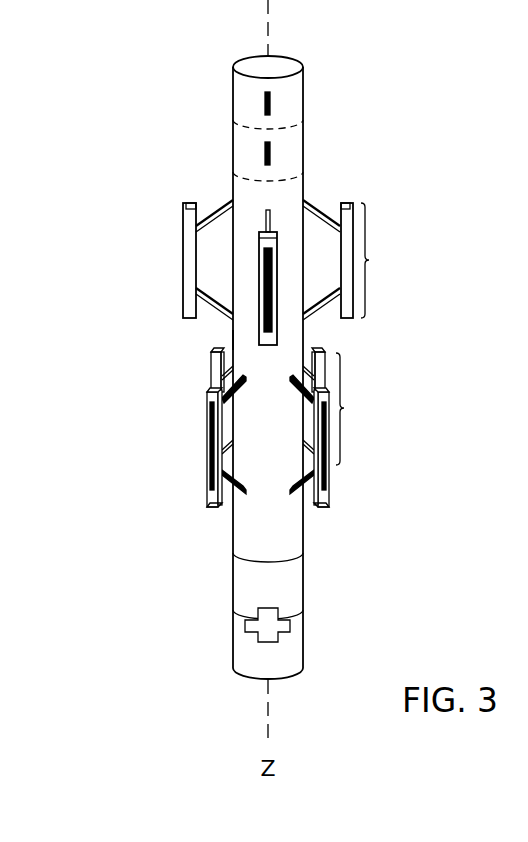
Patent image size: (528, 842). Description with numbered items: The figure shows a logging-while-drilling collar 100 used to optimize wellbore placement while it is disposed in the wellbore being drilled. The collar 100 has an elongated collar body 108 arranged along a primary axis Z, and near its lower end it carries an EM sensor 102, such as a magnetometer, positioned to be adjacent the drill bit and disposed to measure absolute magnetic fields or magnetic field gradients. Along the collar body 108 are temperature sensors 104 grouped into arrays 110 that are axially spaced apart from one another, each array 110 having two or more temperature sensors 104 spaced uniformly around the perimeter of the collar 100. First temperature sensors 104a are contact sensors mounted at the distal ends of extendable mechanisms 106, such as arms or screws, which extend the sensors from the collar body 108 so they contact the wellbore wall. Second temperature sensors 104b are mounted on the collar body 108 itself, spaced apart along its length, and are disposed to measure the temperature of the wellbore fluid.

The logging-while-drilling collar 100 is at (178, 68).
The EM sensor 102 is at (293, 655).
The temperature sensor 104 is at (208, 476).
The first temperature sensor 104a is at (183, 258).
The second temperature sensor 104b is at (272, 152).
The extendable mechanism 106 is at (213, 216).
The collar body 108 is at (233, 340).
The temperature sensor array 110 is at (375, 334).